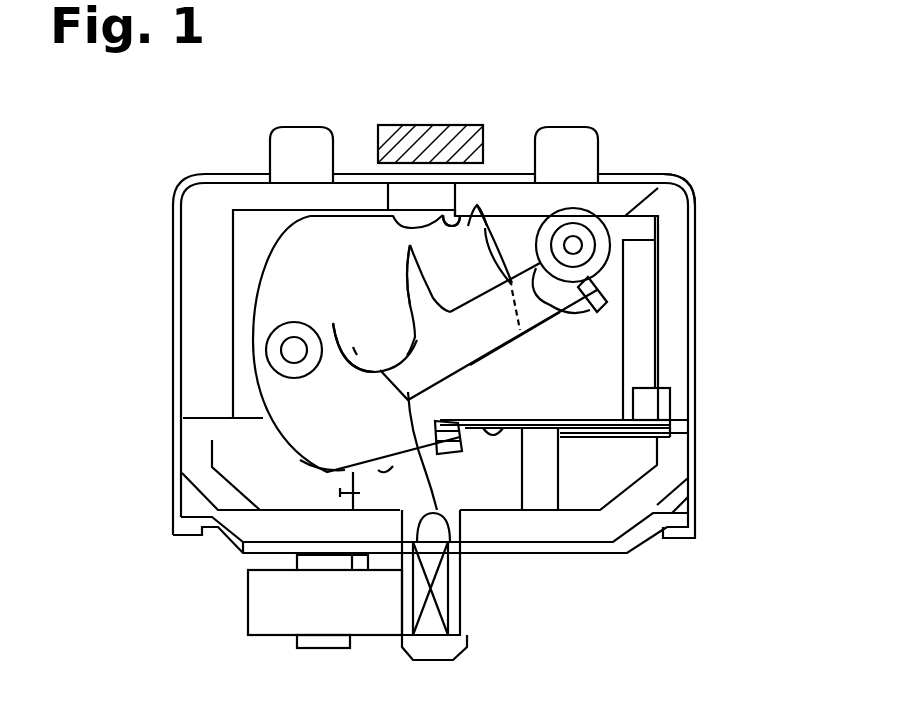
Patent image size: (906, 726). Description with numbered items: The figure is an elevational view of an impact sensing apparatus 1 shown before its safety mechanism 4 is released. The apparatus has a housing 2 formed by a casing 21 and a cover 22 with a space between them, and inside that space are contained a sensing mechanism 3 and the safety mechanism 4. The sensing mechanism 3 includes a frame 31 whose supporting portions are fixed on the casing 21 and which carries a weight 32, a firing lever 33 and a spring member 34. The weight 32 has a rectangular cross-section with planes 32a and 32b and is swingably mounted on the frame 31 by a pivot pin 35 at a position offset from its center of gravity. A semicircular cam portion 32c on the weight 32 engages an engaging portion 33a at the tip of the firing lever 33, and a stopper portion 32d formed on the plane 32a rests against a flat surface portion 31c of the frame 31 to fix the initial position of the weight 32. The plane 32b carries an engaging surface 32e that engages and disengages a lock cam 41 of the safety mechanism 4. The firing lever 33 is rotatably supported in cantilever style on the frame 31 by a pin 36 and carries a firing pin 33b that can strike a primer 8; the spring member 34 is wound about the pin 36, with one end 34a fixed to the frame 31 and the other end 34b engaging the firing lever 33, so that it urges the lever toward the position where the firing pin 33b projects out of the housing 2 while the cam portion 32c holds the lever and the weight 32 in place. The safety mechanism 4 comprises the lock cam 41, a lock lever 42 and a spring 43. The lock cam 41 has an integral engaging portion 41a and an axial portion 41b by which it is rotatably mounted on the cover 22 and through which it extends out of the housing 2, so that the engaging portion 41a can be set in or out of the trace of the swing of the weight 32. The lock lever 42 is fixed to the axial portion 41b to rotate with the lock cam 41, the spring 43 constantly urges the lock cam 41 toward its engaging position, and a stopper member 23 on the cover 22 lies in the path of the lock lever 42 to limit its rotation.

The impact sensing apparatus 1 is at (160, 323).
The housing 2 is at (407, 160).
The sensing mechanism 3 is at (552, 345).
The safety mechanism 4 is at (277, 450).
The primer 8 is at (447, 210).
The casing 21 is at (680, 180).
The cover 22 is at (597, 523).
The stopper member 23 is at (327, 643).
The frame 31 is at (193, 193).
The flat surface portion 31c is at (444, 215).
The weight 32 is at (350, 208).
The plane 32a is at (313, 214).
The plane 32b is at (375, 467).
The semicircular cam portion 32c is at (353, 325).
The stopper portion 32d is at (545, 330).
The engaging surface 32e is at (540, 410).
The firing lever 33 is at (523, 270).
The engaging portion 33a is at (437, 510).
The firing pin 33b is at (413, 290).
The spring member 34 is at (597, 207).
The one end of spring member 34a is at (625, 216).
The other end of spring member 34b is at (600, 297).
The pivot pin 35 is at (293, 350).
The pin 36 is at (580, 248).
The lock cam 41 is at (520, 483).
The engaging portion 41a is at (357, 495).
The axial portion 41b is at (420, 600).
The lock lever 42 is at (282, 637).
The spring 43 is at (450, 455).